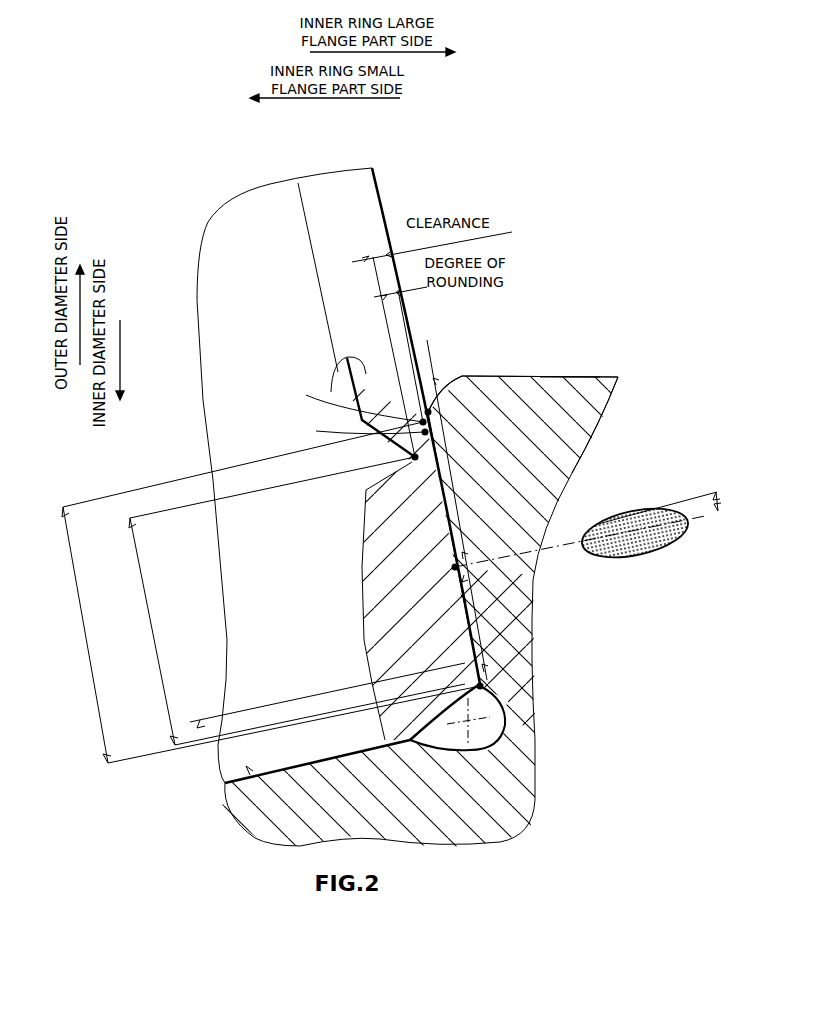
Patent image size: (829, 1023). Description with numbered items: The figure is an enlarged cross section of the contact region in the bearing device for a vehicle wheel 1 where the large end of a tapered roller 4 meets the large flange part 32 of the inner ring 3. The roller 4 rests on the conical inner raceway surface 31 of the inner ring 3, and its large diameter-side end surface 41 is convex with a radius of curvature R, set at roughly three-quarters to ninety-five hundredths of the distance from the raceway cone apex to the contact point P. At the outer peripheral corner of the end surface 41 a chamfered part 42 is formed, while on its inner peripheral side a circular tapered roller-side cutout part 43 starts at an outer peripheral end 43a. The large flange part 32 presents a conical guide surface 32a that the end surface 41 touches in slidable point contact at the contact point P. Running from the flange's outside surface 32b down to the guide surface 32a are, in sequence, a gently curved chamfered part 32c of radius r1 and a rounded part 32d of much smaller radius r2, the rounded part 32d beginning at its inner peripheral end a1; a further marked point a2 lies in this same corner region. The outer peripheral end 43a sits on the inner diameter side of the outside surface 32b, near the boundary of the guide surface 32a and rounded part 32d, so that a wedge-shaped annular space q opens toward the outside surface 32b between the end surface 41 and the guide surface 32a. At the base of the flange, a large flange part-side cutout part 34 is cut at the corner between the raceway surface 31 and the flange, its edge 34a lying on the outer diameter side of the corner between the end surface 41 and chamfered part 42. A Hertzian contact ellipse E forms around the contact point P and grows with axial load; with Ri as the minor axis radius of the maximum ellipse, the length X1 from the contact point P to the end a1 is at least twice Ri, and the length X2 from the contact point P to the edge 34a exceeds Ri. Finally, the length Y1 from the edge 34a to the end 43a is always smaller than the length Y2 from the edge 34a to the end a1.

The bearing device for a vehicle wheel 1 is at (616, 117).
The inner ring 3 is at (240, 770).
The tapered roller 4 is at (376, 172).
The inner raceway surface 31 is at (358, 754).
The large flange part 32 is at (584, 377).
The guide surface 32a is at (439, 487).
The outside surface 32b is at (558, 377).
The chamfered part 32c is at (452, 376).
The rounded part 32d is at (421, 421).
The large flange part-side cutout part 34 is at (475, 753).
The edge 34a is at (498, 715).
The large diameter-side end surface 41 is at (382, 214).
The chamfered part 42 is at (428, 752).
The tapered roller-side cutout part 43 is at (410, 353).
The outer peripheral end 43a is at (414, 461).
The inner peripheral end a1 is at (360, 396).
The contact start point a2 is at (428, 410).
The annular space q is at (364, 432).
The radius of curvature of the chamfered part r1 is at (457, 385).
The radius of curvature of the rounded part r2 is at (431, 427).
The contact point P is at (452, 567).
The shortest length from contact point to rounded part boundary X1 is at (484, 490).
The shortest length from contact point to cutout boundary X2 is at (503, 618).
The shortest length from edge to outer peripheral end Y1 is at (294, 601).
The shortest length from edge to inner peripheral end Y2 is at (267, 592).
The radius of curvature R is at (335, 703).
The minor axis radius Ri is at (669, 505).
The contact ellipse E is at (633, 512).